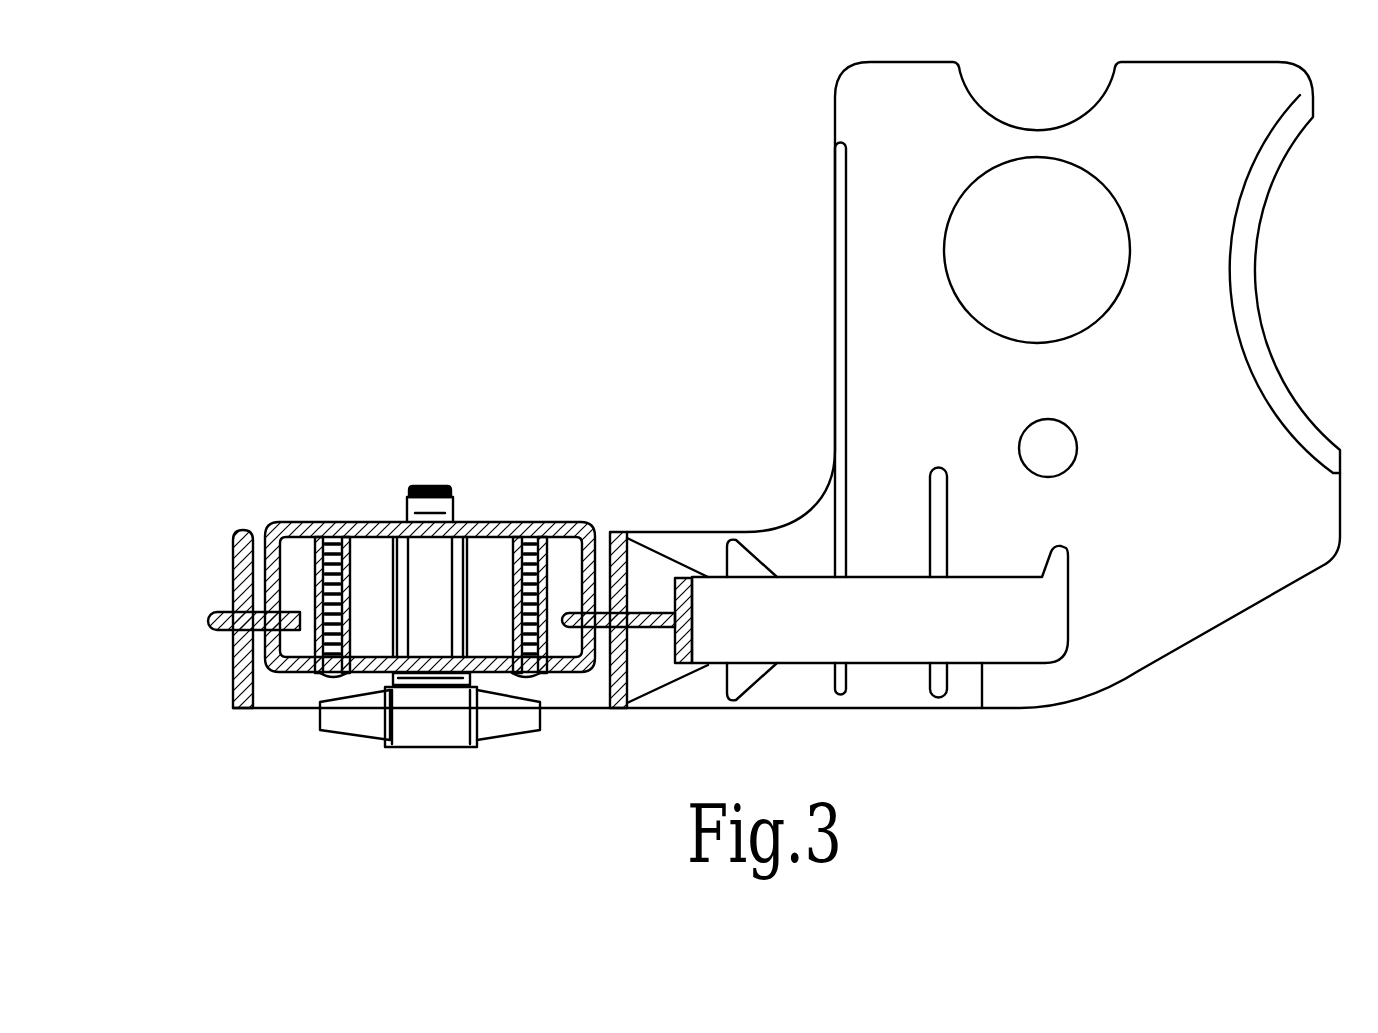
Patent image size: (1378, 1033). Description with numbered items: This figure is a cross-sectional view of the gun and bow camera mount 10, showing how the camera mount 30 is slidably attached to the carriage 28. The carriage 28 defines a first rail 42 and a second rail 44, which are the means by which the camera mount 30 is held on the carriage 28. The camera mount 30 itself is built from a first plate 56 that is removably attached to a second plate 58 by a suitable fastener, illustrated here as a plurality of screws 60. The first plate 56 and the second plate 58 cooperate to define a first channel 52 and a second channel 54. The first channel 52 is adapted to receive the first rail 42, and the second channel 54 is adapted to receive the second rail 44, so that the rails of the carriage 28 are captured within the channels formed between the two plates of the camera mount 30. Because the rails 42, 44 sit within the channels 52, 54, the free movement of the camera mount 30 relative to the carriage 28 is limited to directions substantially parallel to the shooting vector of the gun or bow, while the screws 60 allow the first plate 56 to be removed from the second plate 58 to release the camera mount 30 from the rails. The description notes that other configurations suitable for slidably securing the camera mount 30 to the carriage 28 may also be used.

The gun and bow camera mount 10 is at (657, 740).
The carriage 28 is at (157, 610).
The camera mount 30 is at (502, 502).
The first rail 42 is at (220, 612).
The second rail 44 is at (600, 613).
The first channel 52 is at (290, 610).
The second channel 54 is at (570, 610).
The first plate 56 is at (372, 521).
The second plate 58 is at (350, 675).
The screws 60 is at (325, 673).